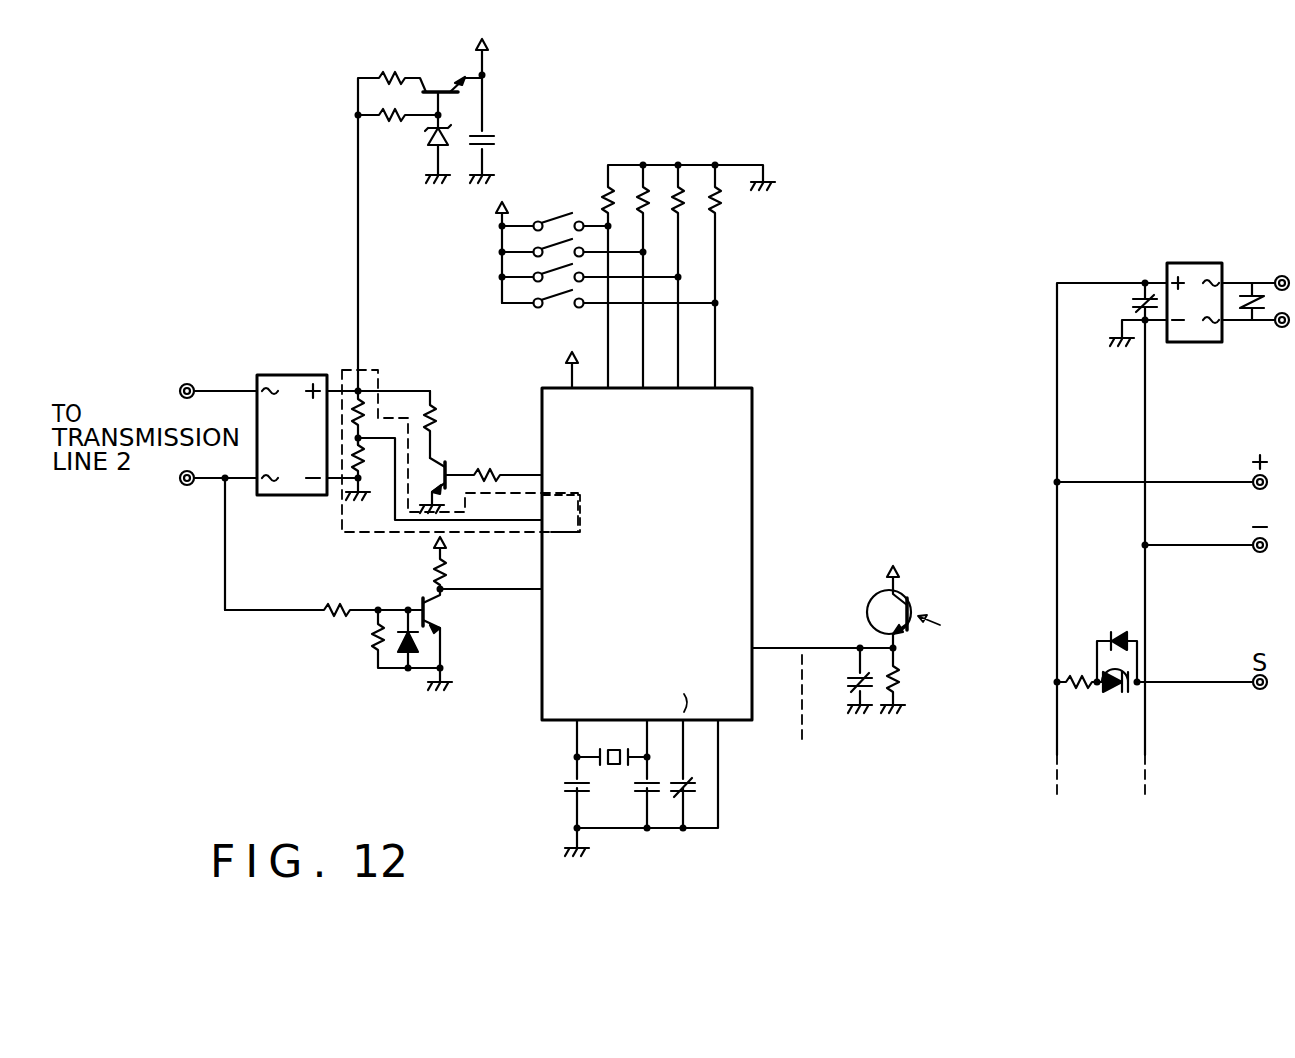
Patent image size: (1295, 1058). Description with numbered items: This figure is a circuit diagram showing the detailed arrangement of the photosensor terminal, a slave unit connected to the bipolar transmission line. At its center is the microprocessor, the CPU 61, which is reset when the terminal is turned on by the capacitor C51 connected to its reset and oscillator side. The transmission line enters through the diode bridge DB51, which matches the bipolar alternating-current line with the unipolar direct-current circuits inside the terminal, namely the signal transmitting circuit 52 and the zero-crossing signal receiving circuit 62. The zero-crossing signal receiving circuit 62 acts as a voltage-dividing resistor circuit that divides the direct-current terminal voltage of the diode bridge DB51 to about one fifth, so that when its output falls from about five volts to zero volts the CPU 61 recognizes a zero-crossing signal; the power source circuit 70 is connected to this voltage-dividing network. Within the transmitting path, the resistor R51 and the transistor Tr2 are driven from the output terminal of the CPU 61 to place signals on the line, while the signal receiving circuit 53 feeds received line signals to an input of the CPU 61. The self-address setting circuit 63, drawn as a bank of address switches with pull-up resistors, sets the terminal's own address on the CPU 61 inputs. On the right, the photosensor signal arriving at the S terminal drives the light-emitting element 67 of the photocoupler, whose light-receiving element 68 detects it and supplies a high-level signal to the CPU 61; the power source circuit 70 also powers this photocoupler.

The power source circuit 70 is at (430, 39).
The self-address setting circuit 63 is at (694, 153).
The signal transmitting circuit 52 is at (434, 454).
The zero-crossing signal receiving circuit 62 is at (394, 532).
The signal receiving circuit 53 is at (325, 672).
The microprocessor (CPU) 61 is at (542, 704).
The light-receiving element 68 is at (910, 602).
The light-emitting element 67 is at (1112, 693).
The resistor R51 is at (453, 424).
The transistor Tr2 is at (530, 454).
The diode bridge DB51 is at (253, 492).
The capacitor C51 is at (641, 791).